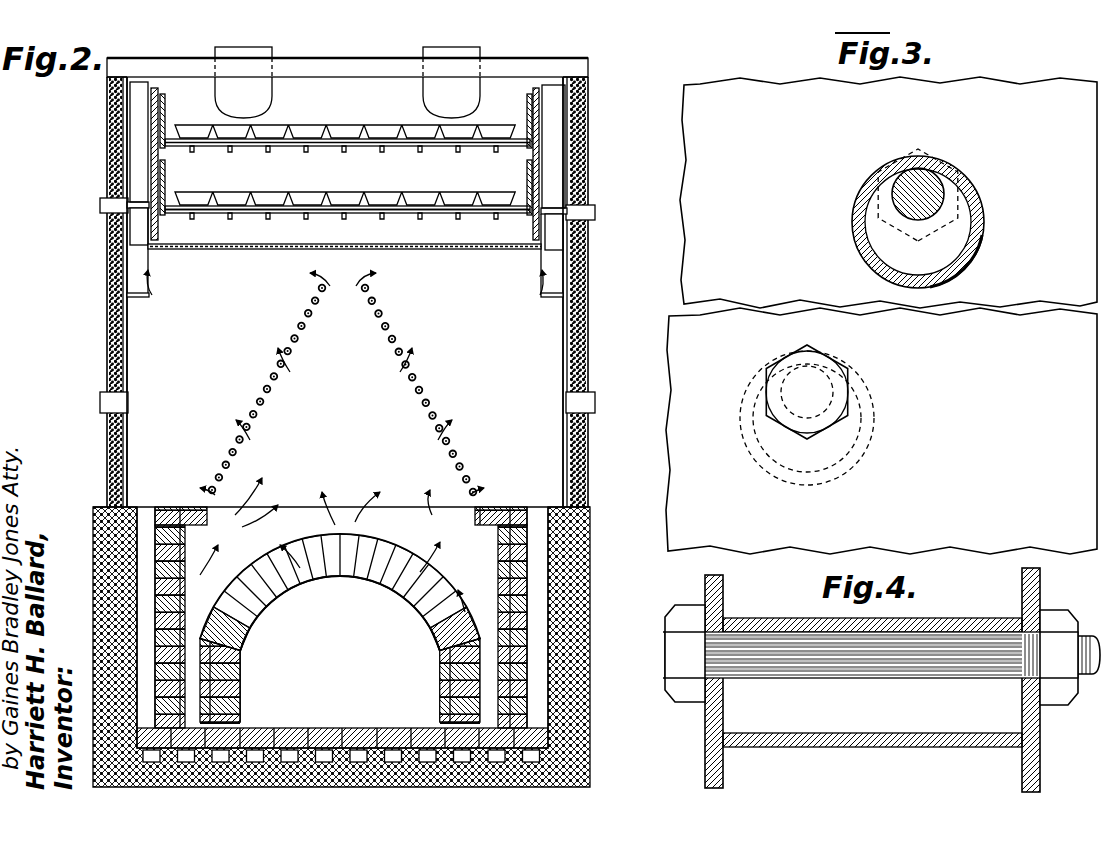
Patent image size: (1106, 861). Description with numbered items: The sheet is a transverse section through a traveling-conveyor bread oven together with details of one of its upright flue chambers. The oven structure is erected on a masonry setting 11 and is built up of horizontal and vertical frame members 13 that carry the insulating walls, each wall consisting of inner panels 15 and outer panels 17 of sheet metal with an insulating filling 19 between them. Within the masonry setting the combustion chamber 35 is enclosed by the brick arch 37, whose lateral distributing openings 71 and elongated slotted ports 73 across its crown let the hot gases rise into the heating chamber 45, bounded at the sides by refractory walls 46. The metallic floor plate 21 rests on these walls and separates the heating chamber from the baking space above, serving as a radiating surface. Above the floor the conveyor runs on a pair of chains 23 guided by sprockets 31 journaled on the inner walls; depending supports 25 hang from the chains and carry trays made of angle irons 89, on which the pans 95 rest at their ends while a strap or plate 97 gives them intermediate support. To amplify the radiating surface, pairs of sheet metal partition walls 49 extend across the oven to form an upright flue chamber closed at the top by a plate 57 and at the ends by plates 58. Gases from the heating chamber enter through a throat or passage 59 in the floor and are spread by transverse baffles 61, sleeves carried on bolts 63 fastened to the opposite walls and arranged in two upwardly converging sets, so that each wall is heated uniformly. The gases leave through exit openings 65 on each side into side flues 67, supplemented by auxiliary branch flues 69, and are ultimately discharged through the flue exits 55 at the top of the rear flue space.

In FIG. 2, the masonry setting 11 is at (172, 565).
In FIG. 2, the frame members 13 is at (103, 204).
In FIG. 2, the inner panels 15 is at (127, 345).
In FIG. 2, the outer panels 17 is at (108, 335).
In FIG. 2, the insulating filling 19 is at (113, 369).
In FIG. 2, the floor plate 21 is at (165, 507).
In FIG. 2, the chains 23 is at (112, 92).
In FIG. 2, the depending supports 25 is at (167, 190).
In FIG. 2, the guiding sprockets 31 is at (158, 115).
In FIG. 2, the combustion chamber 35 is at (440, 600).
In FIG. 2, the brick arch 37 is at (392, 556).
In FIG. 2, the heating chamber 45 is at (244, 562).
In FIG. 2, the refractory walls 46 is at (175, 605).
In FIG. 2, the partition walls 49 is at (566, 456).
In FIG. 4, the partition walls 49 is at (720, 768).
In FIG. 2, the flue exits 55 is at (230, 52).
In FIG. 2, the plate 57 is at (376, 248).
In FIG. 2, the end plates 58 is at (131, 425).
In FIG. 2, the throat or passage 59 is at (292, 506).
In FIG. 2, the baffles 61 is at (343, 390).
In FIG. 3, the baffles 61 is at (968, 258).
In FIG. 4, the baffles 61 is at (850, 748).
In FIG. 2, the bolts 63 is at (303, 322).
In FIG. 3, the bolts 63 is at (935, 185).
In FIG. 4, the bolts 63 is at (890, 666).
In FIG. 2, the exit openings 65 is at (150, 258).
In FIG. 2, the flues 67 is at (112, 228).
In FIG. 2, the auxiliary branch flues 69 is at (344, 66).
In FIG. 2, the lateral distributing openings 71 is at (240, 728).
In FIG. 2, the slotted ports 73 is at (245, 624).
In FIG. 2, the angle irons 89 is at (302, 207).
In FIG. 2, the pans 95 is at (372, 126).
In FIG. 2, the strap or plate 97 is at (252, 215).